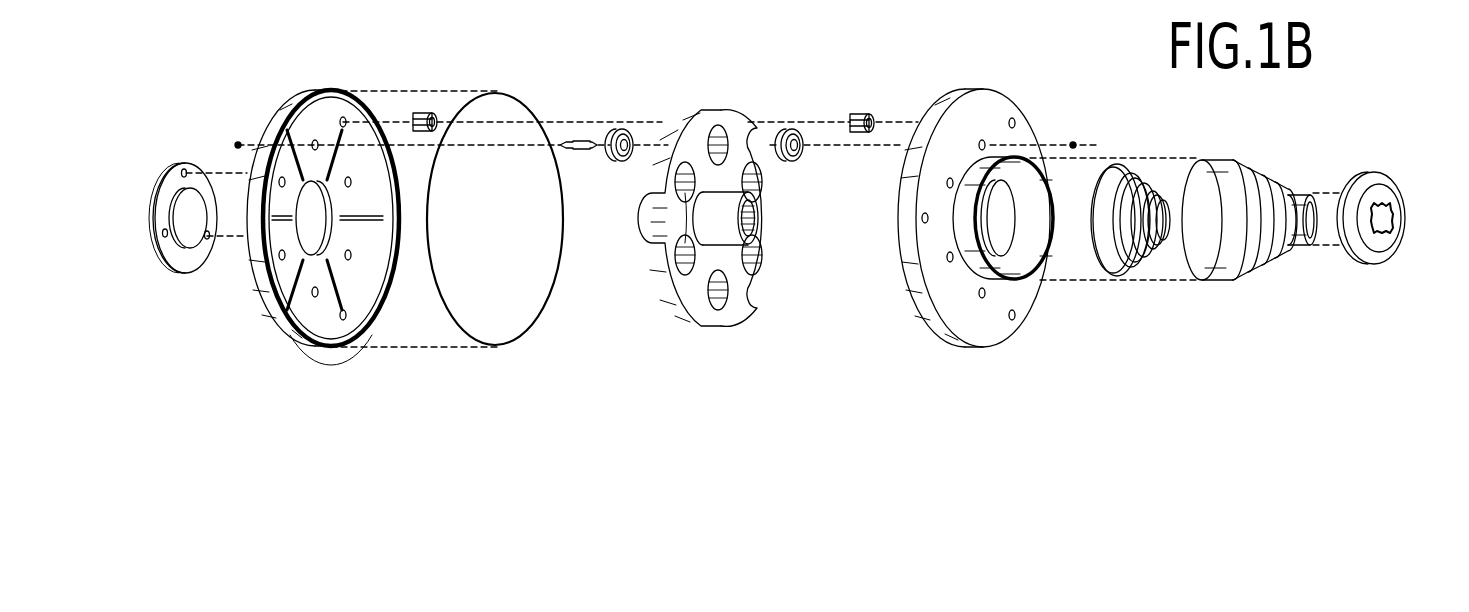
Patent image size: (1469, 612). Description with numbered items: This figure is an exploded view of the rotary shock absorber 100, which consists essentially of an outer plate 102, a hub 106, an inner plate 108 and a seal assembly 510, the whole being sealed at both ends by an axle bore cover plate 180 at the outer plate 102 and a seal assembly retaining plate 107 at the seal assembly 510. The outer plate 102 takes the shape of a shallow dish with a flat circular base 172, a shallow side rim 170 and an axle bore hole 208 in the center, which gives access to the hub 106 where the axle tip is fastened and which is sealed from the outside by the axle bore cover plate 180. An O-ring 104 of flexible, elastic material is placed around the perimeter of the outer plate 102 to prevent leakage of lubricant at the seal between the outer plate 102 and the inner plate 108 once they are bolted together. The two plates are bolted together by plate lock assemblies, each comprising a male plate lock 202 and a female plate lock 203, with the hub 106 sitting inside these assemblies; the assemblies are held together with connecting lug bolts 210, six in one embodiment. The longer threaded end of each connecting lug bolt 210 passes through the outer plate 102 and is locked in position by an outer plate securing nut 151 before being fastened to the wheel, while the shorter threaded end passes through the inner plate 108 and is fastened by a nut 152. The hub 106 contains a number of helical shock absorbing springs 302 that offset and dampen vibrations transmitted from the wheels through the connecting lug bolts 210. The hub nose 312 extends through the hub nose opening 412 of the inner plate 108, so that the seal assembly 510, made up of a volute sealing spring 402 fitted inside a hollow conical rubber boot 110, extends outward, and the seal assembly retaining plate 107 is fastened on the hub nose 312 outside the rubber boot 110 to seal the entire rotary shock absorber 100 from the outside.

The rotary shock absorber 100 is at (1219, 115).
The outer plate securing nut 151 is at (238, 142).
The nut 152 is at (1073, 142).
The axle bore cover plate 180 is at (188, 276).
The outer plate 102 is at (332, 212).
The flat circular base 172 is at (313, 110).
The shallow side rim 170 is at (303, 348).
The axle bore hole 208 is at (327, 230).
The O-ring 104 is at (540, 318).
The male plate lock 202 is at (425, 112).
The female plate lock 203 is at (862, 113).
The connecting lug bolt 210 is at (578, 140).
The helical shock absorbing spring 302 is at (622, 128).
The hub 106 is at (731, 246).
The hub nose 312 is at (766, 283).
The inner plate 108 is at (978, 219).
The hub nose opening 412 is at (990, 228).
The sealing spring 402 is at (1142, 274).
The rubber boot 110 is at (1249, 250).
The seal assembly 510 is at (1204, 277).
The seal assembly retaining plate 107 is at (1377, 271).